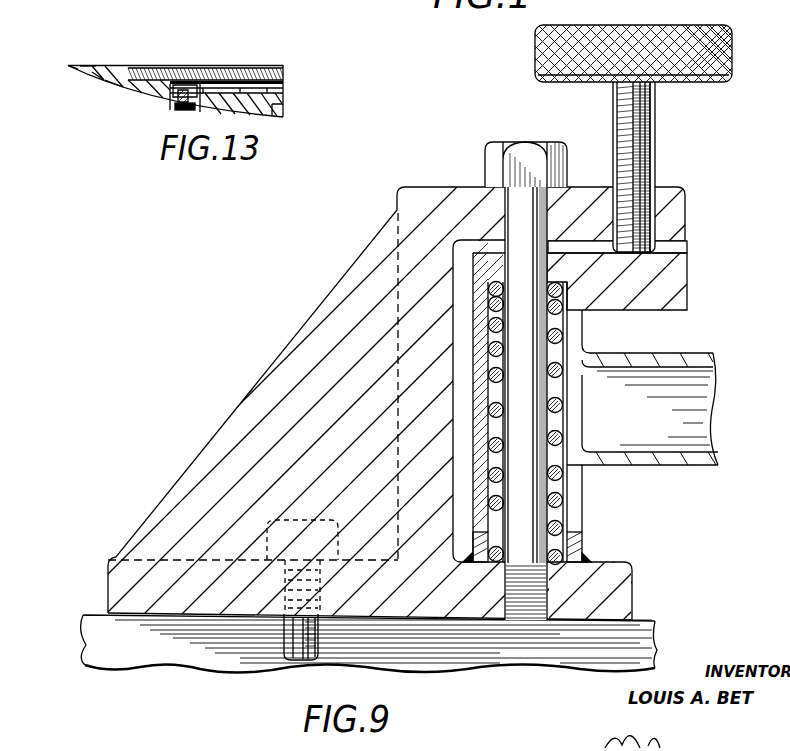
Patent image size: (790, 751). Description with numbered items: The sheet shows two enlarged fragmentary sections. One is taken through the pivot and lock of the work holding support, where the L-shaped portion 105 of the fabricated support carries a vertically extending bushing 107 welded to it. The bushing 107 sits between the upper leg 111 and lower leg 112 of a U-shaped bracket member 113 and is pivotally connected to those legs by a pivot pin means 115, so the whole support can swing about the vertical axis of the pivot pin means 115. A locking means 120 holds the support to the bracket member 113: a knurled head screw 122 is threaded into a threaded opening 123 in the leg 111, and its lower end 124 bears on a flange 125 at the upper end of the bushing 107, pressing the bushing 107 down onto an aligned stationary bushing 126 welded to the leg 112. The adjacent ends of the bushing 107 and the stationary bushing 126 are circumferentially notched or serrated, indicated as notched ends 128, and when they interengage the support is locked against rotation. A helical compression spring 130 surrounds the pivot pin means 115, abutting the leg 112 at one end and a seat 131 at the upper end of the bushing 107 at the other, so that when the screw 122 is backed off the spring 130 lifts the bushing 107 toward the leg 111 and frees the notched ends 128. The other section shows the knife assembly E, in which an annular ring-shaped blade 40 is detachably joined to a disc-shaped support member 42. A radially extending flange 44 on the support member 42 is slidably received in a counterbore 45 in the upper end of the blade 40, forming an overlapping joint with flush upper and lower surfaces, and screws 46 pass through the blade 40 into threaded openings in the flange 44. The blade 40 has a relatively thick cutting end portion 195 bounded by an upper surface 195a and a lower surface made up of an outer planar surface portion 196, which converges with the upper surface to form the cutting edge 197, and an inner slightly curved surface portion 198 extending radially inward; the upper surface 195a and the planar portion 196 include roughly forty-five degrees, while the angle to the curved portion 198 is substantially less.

In FIG. 9, the L-shaped portion 105 is at (700, 352).
In FIG. 9, the bushing 107 is at (575, 483).
In FIG. 9, the leg 111 is at (685, 228).
In FIG. 9, the leg 112 is at (625, 583).
In FIG. 9, the U-shaped bracket member 113 is at (694, 195).
In FIG. 9, the pivot pin means 115 is at (508, 222).
In FIG. 9, the locking means 120 is at (698, 118).
In FIG. 9, the knurled head screw 122 is at (732, 46).
In FIG. 9, the threaded opening 123 is at (657, 213).
In FIG. 9, the lower end 124 is at (655, 248).
In FIG. 9, the flange 125 is at (672, 292).
In FIG. 9, the stationary bushing 126 is at (583, 547).
In FIG. 9, the notched ends 128 is at (480, 527).
In FIG. 9, the helical compression spring 130 is at (552, 333).
In FIG. 9, the seat 131 is at (566, 296).
In FIG. 13, the blade 40 is at (138, 73).
In FIG. 13, the support member 42 is at (283, 114).
In FIG. 13, the flange 44 is at (199, 85).
In FIG. 13, the counterbore 45 is at (180, 108).
In FIG. 13, the screws 46 is at (185, 112).
In FIG. 13, the cutting end portion 195 is at (105, 65).
In FIG. 13, the upper surface 195a is at (90, 65).
In FIG. 13, the outer planar surface portion 196 is at (97, 75).
In FIG. 13, the cutting edge 197 is at (73, 64).
In FIG. 13, the inner slightly curved surface portion 198 is at (112, 88).
In FIG. 13, the knife assembly E is at (260, 61).